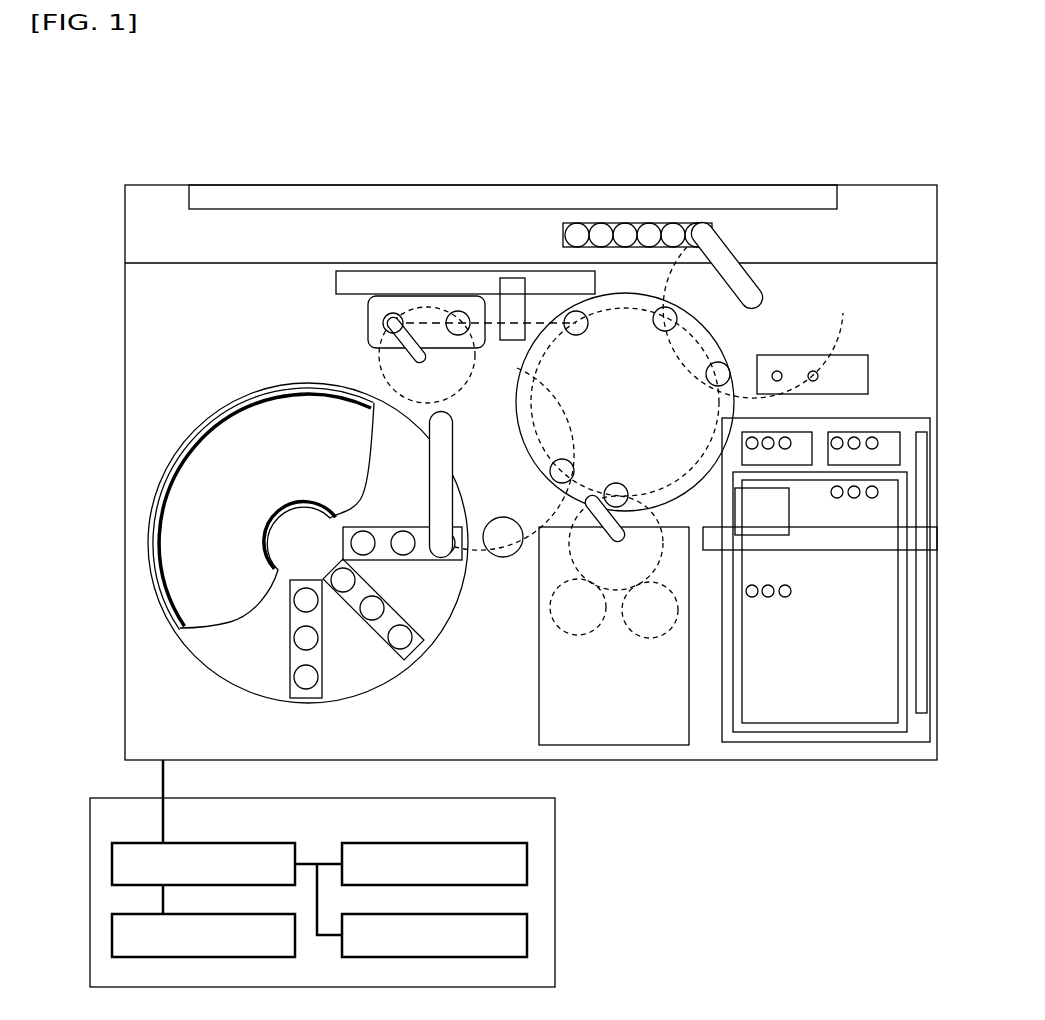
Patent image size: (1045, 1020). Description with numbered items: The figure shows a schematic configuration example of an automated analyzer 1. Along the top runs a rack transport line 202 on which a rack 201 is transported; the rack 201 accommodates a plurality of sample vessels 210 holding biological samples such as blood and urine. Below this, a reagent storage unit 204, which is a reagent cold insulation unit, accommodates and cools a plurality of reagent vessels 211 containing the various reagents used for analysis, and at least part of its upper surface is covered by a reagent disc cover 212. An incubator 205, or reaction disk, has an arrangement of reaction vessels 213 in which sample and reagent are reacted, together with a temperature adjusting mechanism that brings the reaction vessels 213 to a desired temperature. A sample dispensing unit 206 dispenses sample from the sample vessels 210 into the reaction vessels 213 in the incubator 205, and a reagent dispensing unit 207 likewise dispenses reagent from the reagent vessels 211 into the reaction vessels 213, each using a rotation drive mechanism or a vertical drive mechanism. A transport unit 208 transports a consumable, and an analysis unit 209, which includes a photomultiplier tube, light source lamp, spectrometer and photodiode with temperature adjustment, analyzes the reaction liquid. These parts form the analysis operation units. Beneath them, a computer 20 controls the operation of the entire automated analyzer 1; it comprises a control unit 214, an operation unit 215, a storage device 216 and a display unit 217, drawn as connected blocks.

The automated analyzer 1 is at (899, 116).
The computer 20 is at (555, 818).
The rack 201 is at (672, 225).
The rack transport line 202 is at (397, 236).
The reagent storage unit 204 is at (272, 672).
The incubator 205 is at (672, 368).
The sample dispensing unit 206 is at (720, 260).
The reagent dispensing unit 207 is at (450, 558).
The transport unit 208 is at (918, 728).
The analysis unit 209 is at (648, 715).
The sample vessel 210 is at (612, 220).
The reagent vessel 211 is at (315, 692).
The reagent disc cover 212 is at (187, 528).
The reaction vessel 213 is at (727, 368).
The control unit 214 is at (112, 860).
The operation unit 215 is at (112, 935).
The storage device 216 is at (527, 860).
The display unit 217 is at (527, 935).